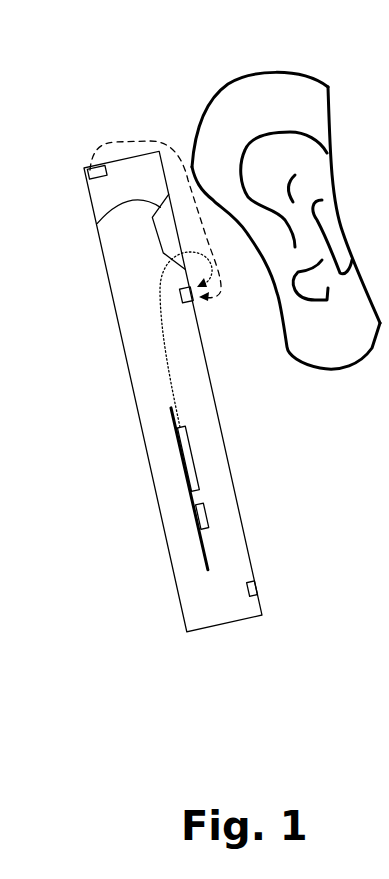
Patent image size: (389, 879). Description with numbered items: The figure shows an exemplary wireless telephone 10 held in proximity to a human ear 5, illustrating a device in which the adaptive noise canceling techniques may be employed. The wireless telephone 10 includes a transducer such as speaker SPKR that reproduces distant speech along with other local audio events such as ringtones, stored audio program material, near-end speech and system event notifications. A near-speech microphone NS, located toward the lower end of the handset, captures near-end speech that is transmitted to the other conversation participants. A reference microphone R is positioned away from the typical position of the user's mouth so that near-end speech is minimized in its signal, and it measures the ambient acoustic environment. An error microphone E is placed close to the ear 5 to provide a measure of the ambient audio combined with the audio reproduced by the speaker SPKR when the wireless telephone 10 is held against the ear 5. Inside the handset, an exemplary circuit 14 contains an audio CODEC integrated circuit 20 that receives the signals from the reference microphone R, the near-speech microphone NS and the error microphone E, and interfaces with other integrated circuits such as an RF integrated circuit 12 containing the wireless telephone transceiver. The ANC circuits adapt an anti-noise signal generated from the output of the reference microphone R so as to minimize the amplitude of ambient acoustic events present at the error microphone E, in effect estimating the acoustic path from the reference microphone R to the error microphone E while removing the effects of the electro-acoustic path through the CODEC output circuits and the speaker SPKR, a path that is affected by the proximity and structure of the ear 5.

The human ear 5 is at (280, 72).
The wireless telephone 10 is at (167, 547).
The reference microphone R is at (97, 178).
The speaker SPKR is at (123, 207).
The error microphone E is at (182, 303).
The circuit 14 is at (208, 570).
The audio CODEC integrated circuit 20 is at (180, 446).
The RF integrated circuit 12 is at (208, 512).
The near-speech microphone NS is at (255, 587).